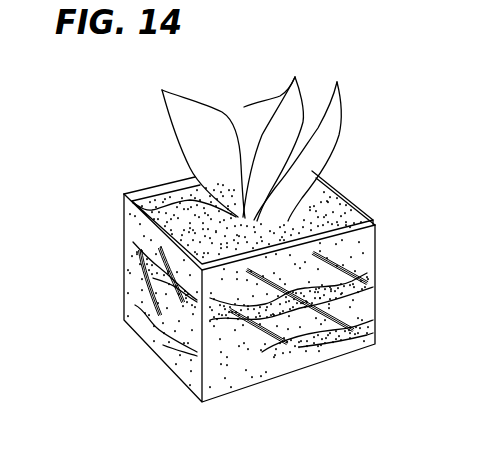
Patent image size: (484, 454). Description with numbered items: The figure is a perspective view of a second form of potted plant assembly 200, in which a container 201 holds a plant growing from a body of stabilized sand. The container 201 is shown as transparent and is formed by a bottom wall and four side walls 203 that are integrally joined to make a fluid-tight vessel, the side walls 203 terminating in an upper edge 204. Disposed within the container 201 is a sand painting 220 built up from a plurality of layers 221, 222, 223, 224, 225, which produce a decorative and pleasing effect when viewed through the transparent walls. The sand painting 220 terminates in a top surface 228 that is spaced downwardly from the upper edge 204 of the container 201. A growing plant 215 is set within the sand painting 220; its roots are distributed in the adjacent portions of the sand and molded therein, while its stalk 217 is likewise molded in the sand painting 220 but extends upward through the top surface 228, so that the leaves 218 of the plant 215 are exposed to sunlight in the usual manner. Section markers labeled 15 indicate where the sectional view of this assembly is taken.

The potted plant assembly 200 is at (66, 91).
The container 201 is at (142, 296).
The side walls 203 is at (180, 332).
The upper edge 204 is at (150, 192).
The growing plant 215 is at (199, 159).
The stalk 217 is at (195, 179).
The leaves 218 is at (316, 102).
The sand painting 220 is at (280, 349).
The layer 221 is at (330, 352).
The layer 222 is at (363, 328).
The layer 223 is at (360, 307).
The layer 224 is at (360, 285).
The layer 225 is at (360, 245).
The top surface 228 is at (124, 207).
The section line of FIG. 15 is at (61, 225).